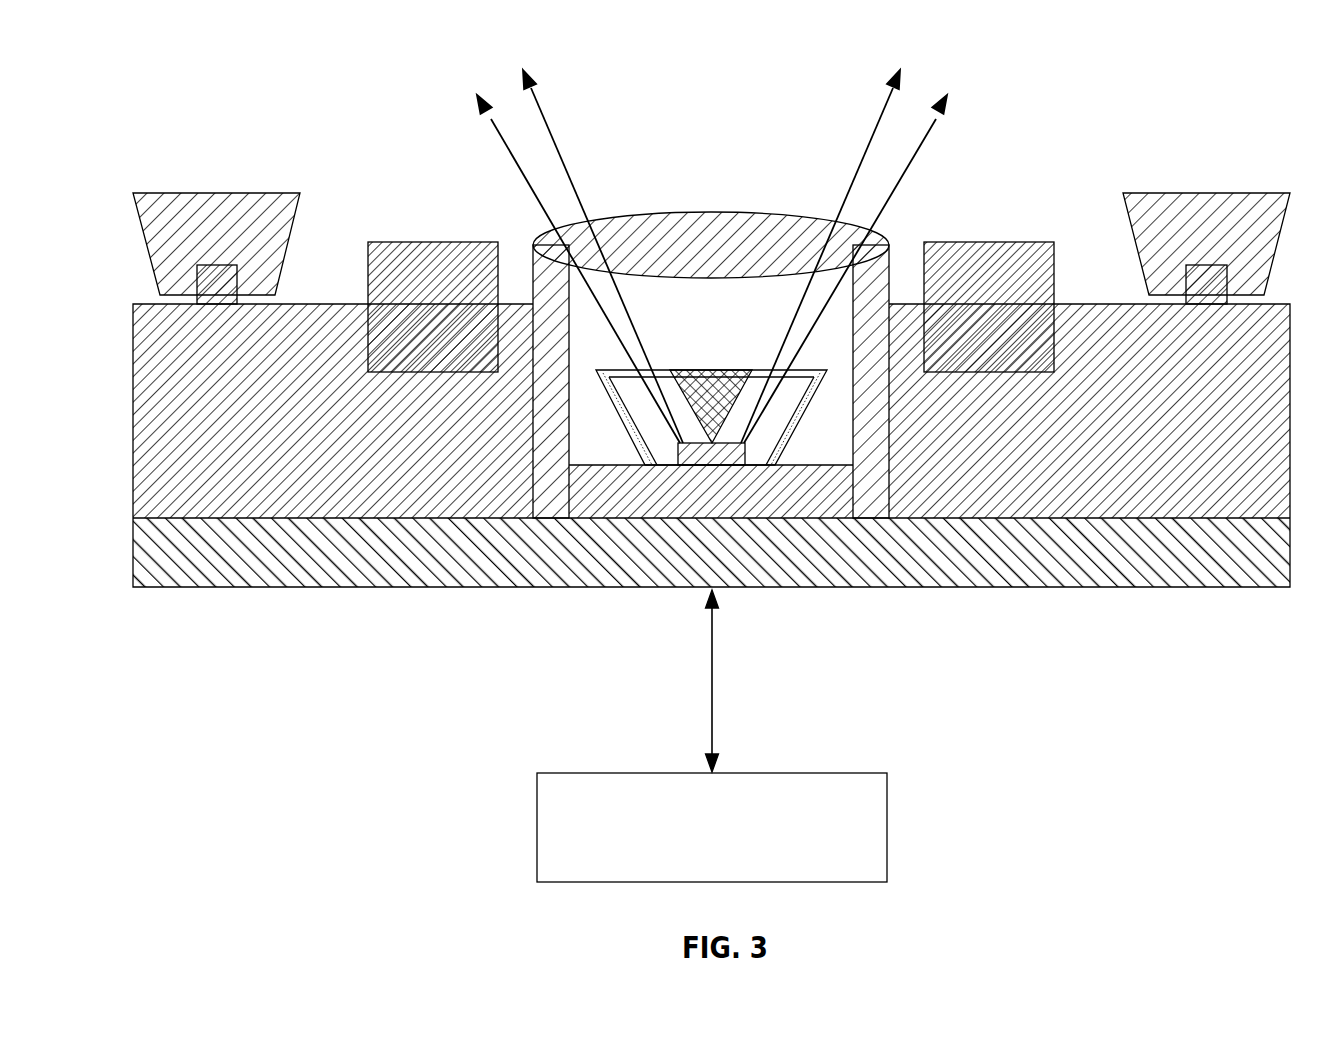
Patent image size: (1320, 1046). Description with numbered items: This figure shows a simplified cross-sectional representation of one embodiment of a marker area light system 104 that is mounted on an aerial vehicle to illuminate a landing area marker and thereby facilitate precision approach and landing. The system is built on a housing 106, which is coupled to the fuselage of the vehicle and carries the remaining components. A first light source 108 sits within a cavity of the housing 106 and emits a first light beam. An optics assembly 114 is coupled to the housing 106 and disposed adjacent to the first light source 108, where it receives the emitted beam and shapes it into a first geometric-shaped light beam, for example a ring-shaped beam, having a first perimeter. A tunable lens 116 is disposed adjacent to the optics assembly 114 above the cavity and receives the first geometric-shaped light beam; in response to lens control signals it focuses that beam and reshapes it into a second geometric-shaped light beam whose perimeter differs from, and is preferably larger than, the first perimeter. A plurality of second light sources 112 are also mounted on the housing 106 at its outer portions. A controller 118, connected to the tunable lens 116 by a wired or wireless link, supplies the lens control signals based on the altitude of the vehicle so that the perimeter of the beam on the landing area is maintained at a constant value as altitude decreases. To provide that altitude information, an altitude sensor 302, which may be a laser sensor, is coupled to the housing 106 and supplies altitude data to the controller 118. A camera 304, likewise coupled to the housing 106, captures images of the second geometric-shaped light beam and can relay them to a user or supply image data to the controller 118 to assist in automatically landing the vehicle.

The marker area light system 104 is at (166, 74).
The housing 106 is at (133, 413).
The first light source 108 is at (713, 446).
The second light sources 112 is at (218, 193).
The optics assembly 114 is at (787, 427).
The tunable lens 116 is at (710, 212).
The controller 118 is at (608, 773).
The altitude sensor 302 is at (435, 242).
The camera 304 is at (992, 242).